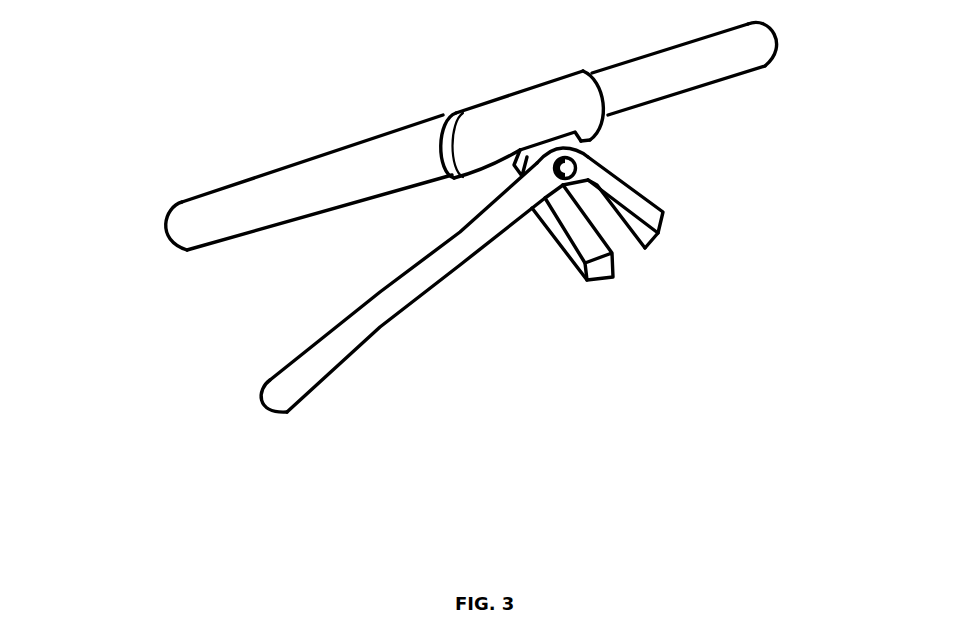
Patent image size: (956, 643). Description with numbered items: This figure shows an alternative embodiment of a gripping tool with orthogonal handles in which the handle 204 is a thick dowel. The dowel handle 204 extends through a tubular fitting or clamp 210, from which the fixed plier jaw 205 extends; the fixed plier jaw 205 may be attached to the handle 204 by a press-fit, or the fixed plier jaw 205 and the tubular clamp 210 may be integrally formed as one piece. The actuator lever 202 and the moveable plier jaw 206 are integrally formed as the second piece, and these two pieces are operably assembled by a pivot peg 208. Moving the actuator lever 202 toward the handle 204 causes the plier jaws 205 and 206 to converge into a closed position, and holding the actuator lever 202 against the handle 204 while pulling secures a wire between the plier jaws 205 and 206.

The actuator lever 202 is at (340, 343).
The handle 204 is at (640, 75).
The fixed plier jaw 205 is at (596, 245).
The moveable plier jaw 206 is at (645, 210).
The pivot peg 208 is at (578, 167).
The clamp 210 is at (540, 109).